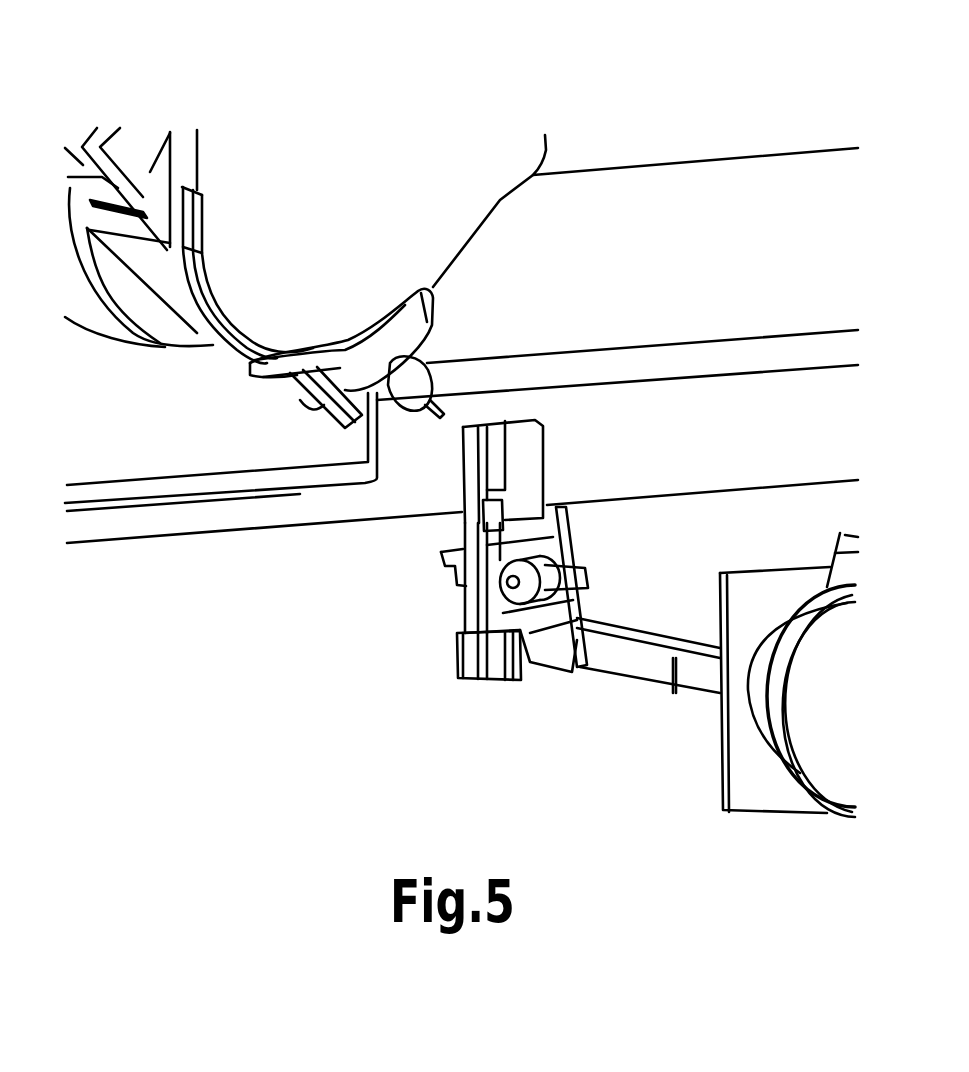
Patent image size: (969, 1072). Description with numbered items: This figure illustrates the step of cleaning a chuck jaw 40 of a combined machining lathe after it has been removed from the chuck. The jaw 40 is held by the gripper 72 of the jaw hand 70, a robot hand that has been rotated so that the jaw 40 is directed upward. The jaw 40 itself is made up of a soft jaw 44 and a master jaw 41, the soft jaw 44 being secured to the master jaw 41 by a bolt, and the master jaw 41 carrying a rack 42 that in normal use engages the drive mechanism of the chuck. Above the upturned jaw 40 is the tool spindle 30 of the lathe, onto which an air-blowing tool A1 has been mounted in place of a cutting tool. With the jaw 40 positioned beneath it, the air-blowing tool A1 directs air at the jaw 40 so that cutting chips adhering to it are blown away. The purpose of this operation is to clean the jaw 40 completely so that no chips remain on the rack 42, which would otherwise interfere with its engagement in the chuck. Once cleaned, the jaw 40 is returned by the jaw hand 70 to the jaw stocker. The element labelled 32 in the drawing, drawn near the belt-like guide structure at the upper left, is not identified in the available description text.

The belt guide assembly 32 is at (272, 203).
The tool spindle 30 is at (397, 293).
The air-blowing tool A1 is at (421, 420).
The soft jaw 44 is at (522, 437).
The gripper 72 is at (530, 513).
The rack 42 is at (472, 470).
The jaw 40 is at (550, 460).
The master jaw 41 is at (450, 620).
The jaw hand 70 is at (485, 688).